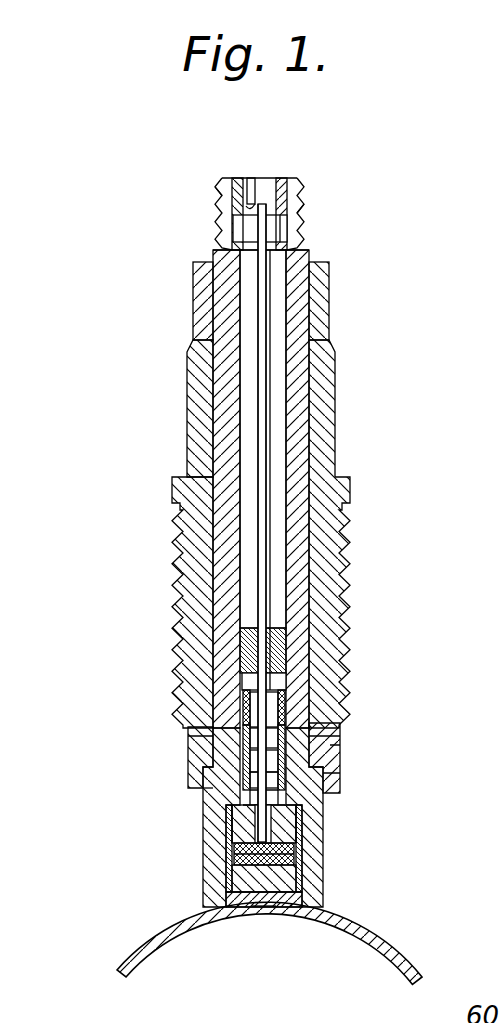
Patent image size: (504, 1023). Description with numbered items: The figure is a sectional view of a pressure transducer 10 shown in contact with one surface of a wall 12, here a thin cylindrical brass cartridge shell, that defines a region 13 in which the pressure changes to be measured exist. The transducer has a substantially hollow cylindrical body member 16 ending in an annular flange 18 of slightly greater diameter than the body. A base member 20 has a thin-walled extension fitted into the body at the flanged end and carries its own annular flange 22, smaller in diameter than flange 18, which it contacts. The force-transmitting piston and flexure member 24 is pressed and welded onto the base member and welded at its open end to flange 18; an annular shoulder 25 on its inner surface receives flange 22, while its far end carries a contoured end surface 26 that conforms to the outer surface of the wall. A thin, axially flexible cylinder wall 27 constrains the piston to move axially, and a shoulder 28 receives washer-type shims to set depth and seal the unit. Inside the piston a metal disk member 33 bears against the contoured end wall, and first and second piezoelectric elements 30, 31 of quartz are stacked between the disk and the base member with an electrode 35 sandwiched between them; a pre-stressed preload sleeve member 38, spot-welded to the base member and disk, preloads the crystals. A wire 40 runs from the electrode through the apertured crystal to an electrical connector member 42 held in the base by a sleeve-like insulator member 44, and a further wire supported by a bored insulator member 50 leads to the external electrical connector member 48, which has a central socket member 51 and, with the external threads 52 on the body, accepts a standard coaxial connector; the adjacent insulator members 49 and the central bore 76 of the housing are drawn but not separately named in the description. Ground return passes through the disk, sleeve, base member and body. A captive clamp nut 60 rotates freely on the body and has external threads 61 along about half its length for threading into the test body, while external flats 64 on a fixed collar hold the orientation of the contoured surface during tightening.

The pressure transducer 10 is at (378, 752).
The wall 12 is at (125, 969).
The region 13 is at (225, 985).
The cylindrical body member 16 is at (300, 457).
The annular flange 18 is at (328, 737).
The base member 20 is at (324, 802).
The annular flange 22 is at (190, 760).
The piston and flexure member 24 is at (165, 796).
The annular shoulder 25 is at (338, 776).
The contoured end surface 26 is at (293, 910).
The elastic cylinder wall 27 is at (302, 898).
The shoulder 28 is at (204, 793).
The first piezoelectric element 30 is at (250, 870).
The second piezoelectric element 31 is at (234, 848).
The metal disk member 33 is at (232, 895).
The electrode 35 is at (298, 872).
The preload sleeve member 38 is at (296, 850).
The wire 40 is at (300, 830).
The electrical connector member 42 is at (258, 741).
The sleeve-like insulator member 44 is at (245, 692).
The external electrical connector member 48 is at (268, 232).
The threads 49 is at (305, 200).
The insulator member 50 is at (287, 650).
The central socket member 51 is at (250, 188).
The external threads 52 is at (217, 196).
The clamp nut 60 is at (190, 414).
The external threads 61 is at (350, 574).
The external flats 64 is at (320, 300).
The bore 76 is at (258, 470).